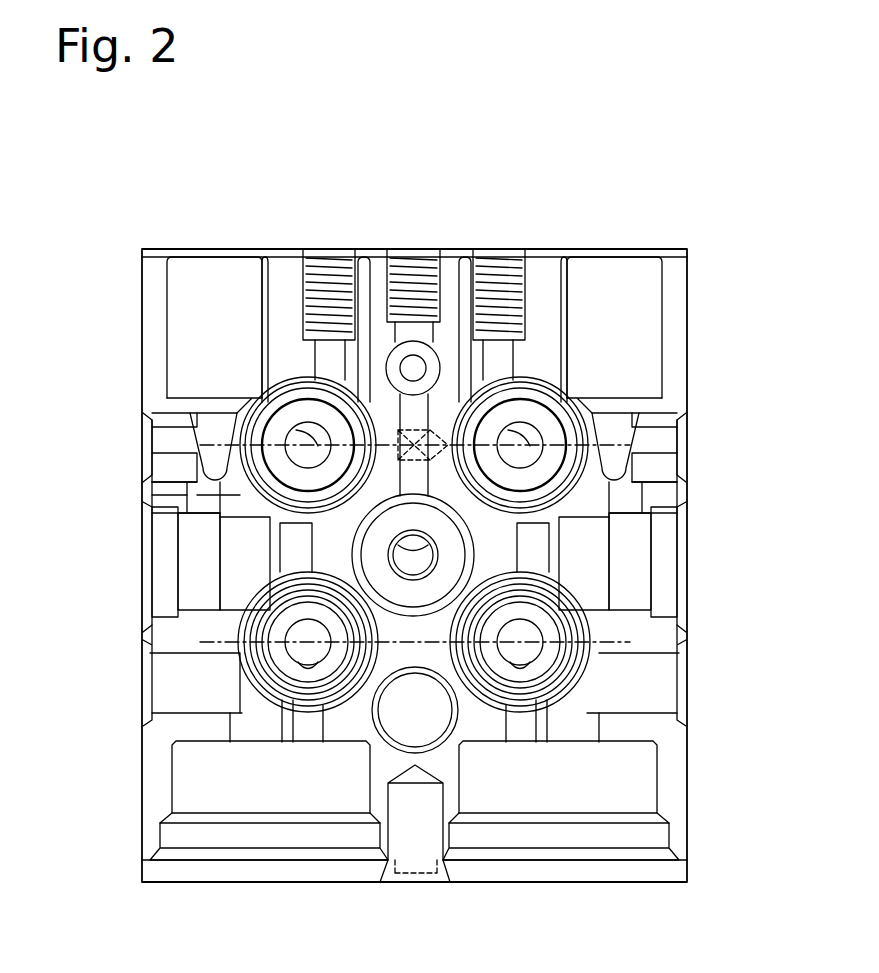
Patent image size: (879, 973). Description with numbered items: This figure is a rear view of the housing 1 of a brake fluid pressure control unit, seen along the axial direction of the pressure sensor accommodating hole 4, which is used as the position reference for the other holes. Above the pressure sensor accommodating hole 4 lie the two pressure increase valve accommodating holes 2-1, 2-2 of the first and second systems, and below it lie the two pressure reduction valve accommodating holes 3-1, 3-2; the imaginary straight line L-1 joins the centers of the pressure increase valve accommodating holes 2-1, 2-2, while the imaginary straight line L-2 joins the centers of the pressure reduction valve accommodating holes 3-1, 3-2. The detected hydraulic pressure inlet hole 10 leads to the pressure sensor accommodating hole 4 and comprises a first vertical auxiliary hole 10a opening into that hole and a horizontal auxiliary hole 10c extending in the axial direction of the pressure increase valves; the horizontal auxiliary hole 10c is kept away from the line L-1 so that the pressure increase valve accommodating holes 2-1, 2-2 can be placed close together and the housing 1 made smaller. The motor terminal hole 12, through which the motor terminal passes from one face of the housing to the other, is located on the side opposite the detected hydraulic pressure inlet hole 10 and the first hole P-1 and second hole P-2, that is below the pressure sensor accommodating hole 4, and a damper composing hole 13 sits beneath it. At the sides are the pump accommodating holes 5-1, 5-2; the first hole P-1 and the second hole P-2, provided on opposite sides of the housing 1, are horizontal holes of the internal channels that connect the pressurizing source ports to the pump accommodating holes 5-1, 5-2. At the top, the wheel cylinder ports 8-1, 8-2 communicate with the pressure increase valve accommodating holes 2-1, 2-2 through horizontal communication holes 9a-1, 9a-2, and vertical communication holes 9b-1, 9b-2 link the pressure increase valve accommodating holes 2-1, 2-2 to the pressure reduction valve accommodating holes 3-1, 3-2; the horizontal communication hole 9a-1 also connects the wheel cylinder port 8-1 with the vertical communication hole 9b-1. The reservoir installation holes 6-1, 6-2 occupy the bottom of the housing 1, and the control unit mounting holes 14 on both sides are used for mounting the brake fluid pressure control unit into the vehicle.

The housing 1 is at (680, 302).
The pressure increase valve accommodating hole 2-1 is at (290, 385).
The pressure increase valve accommodating hole 2-2 is at (580, 385).
The pressure reduction valve accommodating hole 3-1 is at (290, 685).
The pressure reduction valve accommodating hole 3-2 is at (600, 640).
The pressure sensor accommodating hole 4 is at (455, 548).
The pump accommodating hole 5-1 is at (165, 600).
The pump accommodating hole 5-2 is at (662, 585).
The reservoir installation hole 6-1 is at (258, 872).
The reservoir installation hole 6-2 is at (603, 872).
The wheel cylinder port 8-1 is at (215, 282).
The wheel cylinder port 8-2 is at (607, 282).
The horizontal communication hole 9a-1 is at (165, 465).
The horizontal communication hole 9a-2 is at (660, 440).
The vertical communication hole 9b-1 is at (323, 365).
The vertical communication hole 9b-2 is at (505, 365).
The detected hydraulic pressure inlet hole 10 is at (455, 172).
The first vertical auxiliary hole 10a is at (413, 342).
The horizontal auxiliary hole 10c is at (400, 370).
The motor terminal hole 12 is at (440, 715).
The damper composing hole 13 is at (405, 870).
The control unit mounting hole 14 is at (150, 690).
The first hole P-1 is at (215, 435).
The second hole P-2 is at (610, 452).
The imaginary straight line L-1 is at (235, 493).
The imaginary straight line L-2 is at (237, 643).